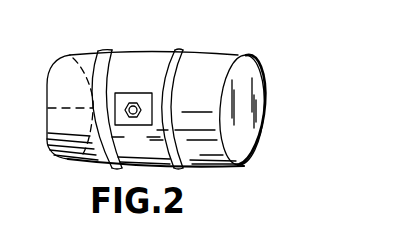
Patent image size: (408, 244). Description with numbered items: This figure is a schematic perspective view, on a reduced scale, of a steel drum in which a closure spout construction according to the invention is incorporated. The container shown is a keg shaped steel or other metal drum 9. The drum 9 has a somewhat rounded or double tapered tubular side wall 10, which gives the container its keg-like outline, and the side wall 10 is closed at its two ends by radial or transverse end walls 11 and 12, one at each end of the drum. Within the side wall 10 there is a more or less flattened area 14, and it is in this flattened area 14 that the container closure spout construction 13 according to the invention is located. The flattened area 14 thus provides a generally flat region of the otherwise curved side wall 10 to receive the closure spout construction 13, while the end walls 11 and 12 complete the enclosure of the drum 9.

The metal drum 9 is at (200, 55).
The tubular side wall 10 is at (98, 165).
The end wall 11 is at (55, 123).
The end wall 12 is at (243, 73).
The container closure spout construction 13 is at (134, 101).
The flattened area 14 is at (147, 106).